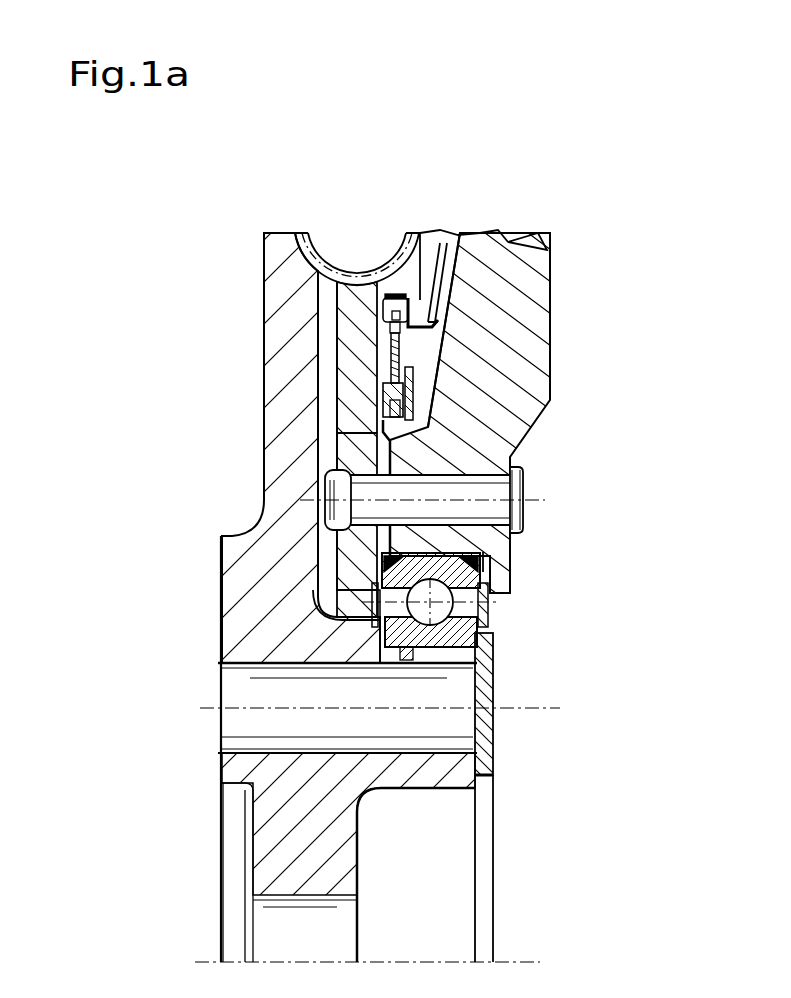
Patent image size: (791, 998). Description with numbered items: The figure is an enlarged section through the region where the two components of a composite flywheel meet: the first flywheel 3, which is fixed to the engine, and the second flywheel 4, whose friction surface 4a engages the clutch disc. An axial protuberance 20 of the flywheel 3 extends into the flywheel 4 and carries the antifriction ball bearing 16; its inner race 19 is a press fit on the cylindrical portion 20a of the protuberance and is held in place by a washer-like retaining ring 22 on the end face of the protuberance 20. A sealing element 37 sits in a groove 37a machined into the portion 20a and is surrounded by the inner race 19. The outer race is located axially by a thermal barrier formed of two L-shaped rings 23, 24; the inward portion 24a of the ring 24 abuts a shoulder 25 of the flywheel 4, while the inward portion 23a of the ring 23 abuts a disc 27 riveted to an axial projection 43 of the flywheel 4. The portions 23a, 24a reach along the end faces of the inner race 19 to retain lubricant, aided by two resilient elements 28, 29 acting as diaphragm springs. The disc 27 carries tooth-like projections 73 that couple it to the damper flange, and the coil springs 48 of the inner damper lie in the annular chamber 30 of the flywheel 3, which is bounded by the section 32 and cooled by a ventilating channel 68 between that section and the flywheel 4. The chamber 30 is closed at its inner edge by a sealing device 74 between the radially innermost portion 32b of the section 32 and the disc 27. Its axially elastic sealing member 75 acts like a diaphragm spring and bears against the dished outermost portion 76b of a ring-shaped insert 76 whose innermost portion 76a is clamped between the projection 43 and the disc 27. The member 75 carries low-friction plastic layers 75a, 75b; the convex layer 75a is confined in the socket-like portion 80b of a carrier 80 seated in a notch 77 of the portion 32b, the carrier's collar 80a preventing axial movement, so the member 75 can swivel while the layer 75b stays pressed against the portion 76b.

The first flywheel 3 is at (287, 333).
The second flywheel 4 is at (525, 361).
The friction surface 4a is at (508, 242).
The antifriction ball bearing 16 is at (290, 756).
The inner race 19 is at (385, 660).
The axial protuberance 20 is at (432, 771).
The cylindrical portion 20a is at (493, 672).
The retaining ring 22 is at (493, 767).
The ring 23 is at (208, 670).
The radially inwardly extending portion 23a is at (383, 590).
The ring 24 is at (375, 671).
The radially inwardly extending portion 24a is at (431, 600).
The shoulder 25 is at (487, 566).
The disc 27 is at (203, 623).
The resilient element 28 is at (400, 612).
The resilient element 29 is at (487, 608).
The annular chamber 30 is at (380, 364).
The section 32 is at (492, 180).
The radially innermost portion 32b is at (436, 285).
The sealing element 37 is at (415, 672).
The groove 37a is at (398, 657).
The axial projection 43 is at (515, 518).
The coil springs 48 is at (226, 177).
The ventilating channel 68 is at (450, 292).
The tooth-like projections 73 is at (345, 458).
The sealing device 74 is at (200, 449).
The sealing member 75 is at (336, 401).
The layer 75a is at (395, 307).
The layer 75b is at (385, 418).
The insert 76 is at (395, 447).
The radially innermost portion 76a is at (355, 553).
The radially outermost portion 76b is at (418, 400).
The notch 77 is at (355, 248).
The carrier 80 is at (359, 163).
The collar 80a is at (430, 325).
The socket-like portion 80b is at (398, 296).